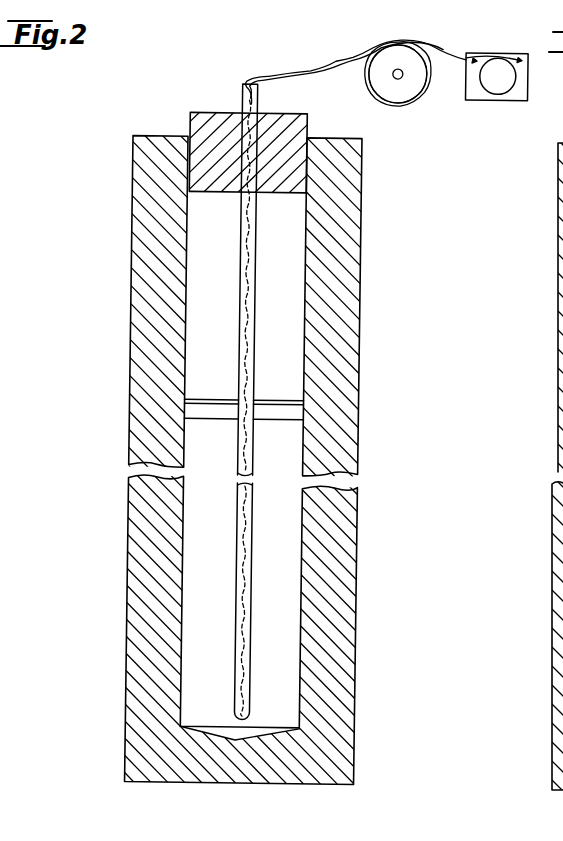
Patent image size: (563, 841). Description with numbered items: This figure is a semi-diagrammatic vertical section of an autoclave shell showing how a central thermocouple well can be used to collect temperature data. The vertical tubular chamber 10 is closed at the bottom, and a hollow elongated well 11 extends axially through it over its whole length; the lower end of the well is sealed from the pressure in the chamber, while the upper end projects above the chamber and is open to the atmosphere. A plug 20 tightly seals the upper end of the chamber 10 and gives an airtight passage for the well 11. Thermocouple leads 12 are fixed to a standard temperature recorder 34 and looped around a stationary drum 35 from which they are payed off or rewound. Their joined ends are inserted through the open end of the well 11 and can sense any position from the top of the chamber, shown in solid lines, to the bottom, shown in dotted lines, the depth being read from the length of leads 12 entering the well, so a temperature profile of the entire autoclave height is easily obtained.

The vertical tubular chamber 10 is at (355, 396).
The hollow elongated well 11 is at (258, 329).
The thermocouple leads 12 is at (338, 60).
The plug 20 is at (279, 194).
The standard temperature recorder 34 is at (527, 95).
The stationary drum 35 is at (412, 87).